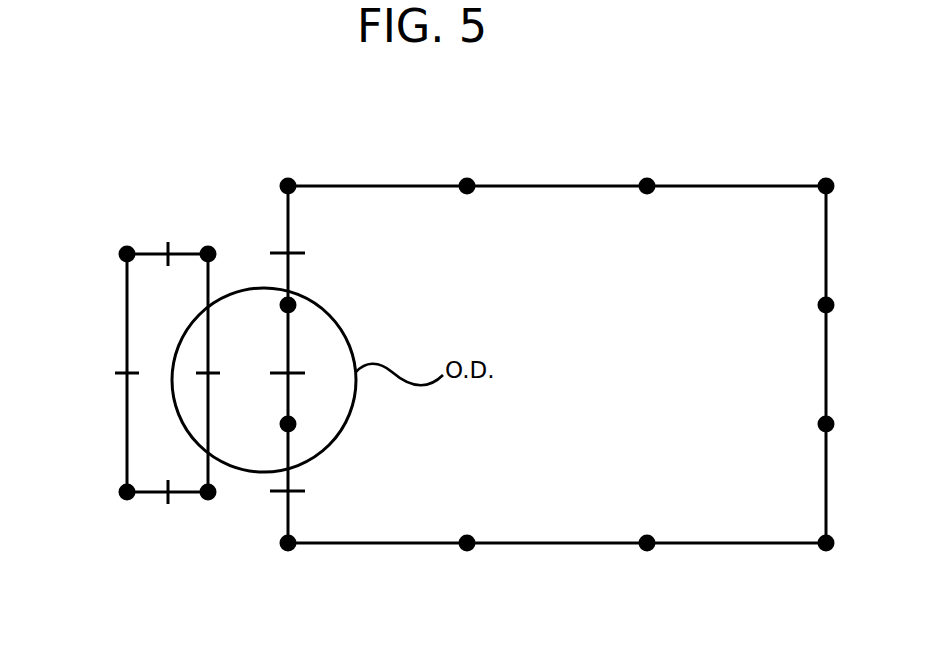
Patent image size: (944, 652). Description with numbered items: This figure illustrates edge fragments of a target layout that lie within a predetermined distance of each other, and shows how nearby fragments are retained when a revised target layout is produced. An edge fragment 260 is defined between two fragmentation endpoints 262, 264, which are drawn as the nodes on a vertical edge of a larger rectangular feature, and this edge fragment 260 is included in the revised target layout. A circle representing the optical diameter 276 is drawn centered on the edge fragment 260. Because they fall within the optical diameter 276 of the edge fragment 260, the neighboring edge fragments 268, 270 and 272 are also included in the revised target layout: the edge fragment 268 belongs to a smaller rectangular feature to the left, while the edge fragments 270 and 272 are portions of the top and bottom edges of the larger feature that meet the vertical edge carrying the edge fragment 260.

The edge fragment 260 is at (290, 360).
The fragmentation endpoint 262 is at (296, 300).
The fragmentation endpoint 264 is at (281, 435).
The edge fragment 268 is at (126, 340).
The edge fragment 270 is at (305, 253).
The edge fragment 272 is at (305, 491).
The optical diameter 276 is at (356, 398).